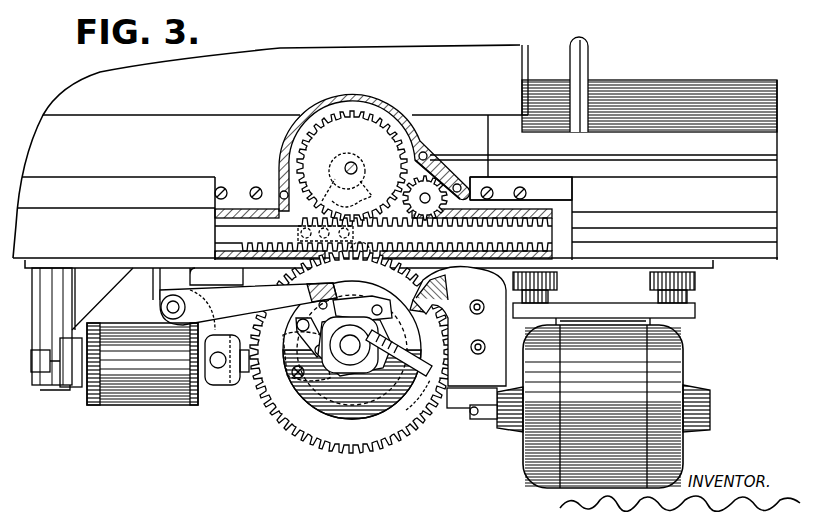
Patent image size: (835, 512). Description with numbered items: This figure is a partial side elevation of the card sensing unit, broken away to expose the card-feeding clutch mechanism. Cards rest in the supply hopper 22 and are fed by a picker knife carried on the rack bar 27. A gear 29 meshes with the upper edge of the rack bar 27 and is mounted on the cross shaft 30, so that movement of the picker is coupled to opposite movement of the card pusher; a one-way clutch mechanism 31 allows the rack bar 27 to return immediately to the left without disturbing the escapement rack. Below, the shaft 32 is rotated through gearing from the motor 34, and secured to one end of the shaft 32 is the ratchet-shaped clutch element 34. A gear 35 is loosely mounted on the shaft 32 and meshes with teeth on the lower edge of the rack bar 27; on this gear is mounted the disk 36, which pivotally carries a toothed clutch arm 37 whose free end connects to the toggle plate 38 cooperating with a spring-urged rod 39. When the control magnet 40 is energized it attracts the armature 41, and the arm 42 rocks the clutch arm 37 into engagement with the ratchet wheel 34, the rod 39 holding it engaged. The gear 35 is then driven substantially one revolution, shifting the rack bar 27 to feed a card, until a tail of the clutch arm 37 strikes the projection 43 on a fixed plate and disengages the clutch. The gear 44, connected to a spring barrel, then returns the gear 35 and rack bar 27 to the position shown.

The supply hopper 22 is at (683, 78).
The rack bar 27 is at (551, 232).
The gear 29 is at (313, 150).
The cross shaft 30 is at (348, 162).
The one-way clutch mechanism 31 is at (364, 166).
The shaft 32 is at (350, 347).
The motor / ratchet-shaped clutch element 34 is at (542, 463).
The gear 35 is at (407, 413).
The disk 36 is at (383, 392).
The clutch arm 37 is at (300, 322).
The toggle plate 38 is at (282, 410).
The spring-urged rod 39 is at (418, 363).
The control magnet 40 is at (140, 372).
The armature 41 is at (207, 382).
The arm 42 is at (283, 292).
The projection 43 is at (433, 297).
The gear 44 is at (433, 190).